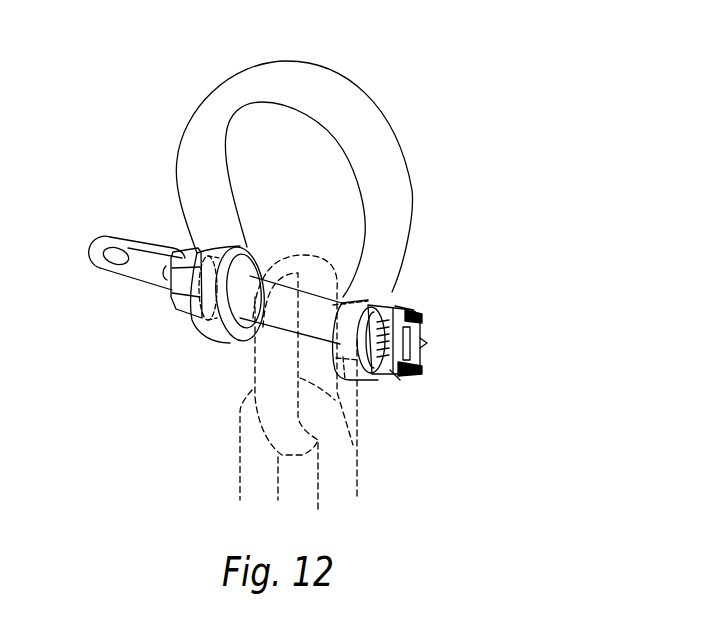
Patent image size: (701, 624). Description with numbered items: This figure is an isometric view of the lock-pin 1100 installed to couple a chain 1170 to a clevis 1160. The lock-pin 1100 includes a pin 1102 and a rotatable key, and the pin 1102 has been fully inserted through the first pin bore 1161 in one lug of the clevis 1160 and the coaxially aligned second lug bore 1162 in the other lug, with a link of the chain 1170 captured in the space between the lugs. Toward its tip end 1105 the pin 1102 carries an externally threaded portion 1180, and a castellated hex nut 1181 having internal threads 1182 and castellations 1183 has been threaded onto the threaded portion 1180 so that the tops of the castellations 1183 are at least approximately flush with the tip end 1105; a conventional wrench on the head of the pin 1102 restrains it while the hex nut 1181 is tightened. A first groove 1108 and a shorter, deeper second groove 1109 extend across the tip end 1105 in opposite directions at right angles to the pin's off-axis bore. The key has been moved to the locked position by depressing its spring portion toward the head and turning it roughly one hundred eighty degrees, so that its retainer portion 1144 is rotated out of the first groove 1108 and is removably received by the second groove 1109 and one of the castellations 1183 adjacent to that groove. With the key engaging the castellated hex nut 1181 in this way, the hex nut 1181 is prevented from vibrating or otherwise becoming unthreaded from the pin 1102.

The lock-pin 1100 is at (139, 483).
The clevis 1160 is at (367, 75).
The first pin bore 1161 is at (228, 343).
The second lug bore 1162 is at (353, 385).
The pin 1102 is at (275, 252).
The externally threaded portion 1180 is at (391, 290).
The castellated hex nut 1181 is at (410, 306).
The castellations 1183 is at (420, 338).
The first groove 1108 is at (420, 343).
The tip end 1105 is at (420, 347).
The retainer portion 1144 is at (413, 374).
The second groove 1109 is at (400, 382).
The internal threads 1182 is at (380, 385).
The chain 1170 is at (365, 492).